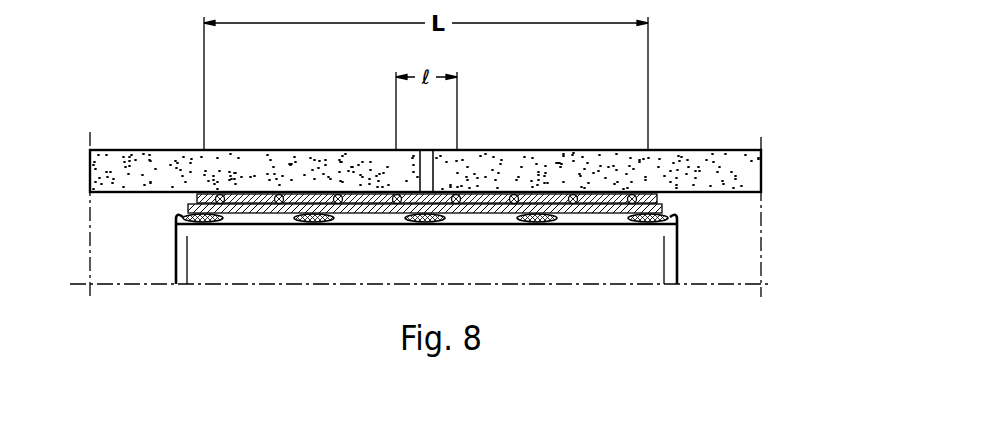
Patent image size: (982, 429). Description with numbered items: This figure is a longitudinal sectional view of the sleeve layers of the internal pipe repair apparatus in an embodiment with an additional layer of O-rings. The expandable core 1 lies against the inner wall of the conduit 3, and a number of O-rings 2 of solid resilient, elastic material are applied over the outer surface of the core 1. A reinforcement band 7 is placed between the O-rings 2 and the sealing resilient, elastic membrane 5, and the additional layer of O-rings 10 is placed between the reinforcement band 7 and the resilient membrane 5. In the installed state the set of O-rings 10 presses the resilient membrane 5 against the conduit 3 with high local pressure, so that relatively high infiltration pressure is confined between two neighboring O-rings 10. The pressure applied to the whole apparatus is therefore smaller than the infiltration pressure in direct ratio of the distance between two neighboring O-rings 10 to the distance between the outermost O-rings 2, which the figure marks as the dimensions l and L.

The expandable core 1 is at (672, 258).
The O-rings 2 is at (309, 212).
The conduit 3 is at (705, 168).
The sealing resilient, elastic membrane 5 is at (355, 192).
The reinforcement band 7 is at (247, 224).
The additional layer of O-rings 10 is at (518, 192).